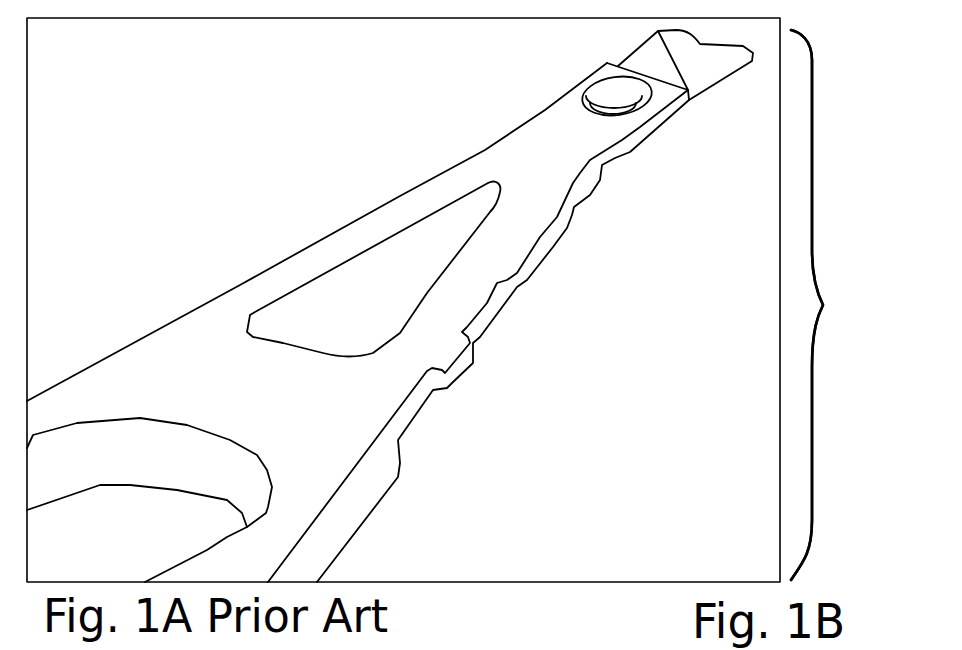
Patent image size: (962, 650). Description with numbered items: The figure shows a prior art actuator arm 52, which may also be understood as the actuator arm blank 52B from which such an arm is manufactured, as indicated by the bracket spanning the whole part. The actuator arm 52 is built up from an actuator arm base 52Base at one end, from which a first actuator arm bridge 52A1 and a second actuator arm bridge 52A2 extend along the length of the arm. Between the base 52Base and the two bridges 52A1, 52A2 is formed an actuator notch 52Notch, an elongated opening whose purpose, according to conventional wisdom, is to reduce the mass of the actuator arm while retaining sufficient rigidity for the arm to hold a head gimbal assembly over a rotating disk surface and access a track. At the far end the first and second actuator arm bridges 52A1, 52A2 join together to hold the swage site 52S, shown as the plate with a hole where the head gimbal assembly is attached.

The first actuator arm bridge 52A1 is at (375, 212).
The swage site 52S is at (622, 107).
The actuator notch 52Notch is at (373, 269).
The second actuator arm bridge 52A2 is at (519, 286).
The actuator arm base 52Base is at (149, 481).
The actuator arm 52 is at (832, 305).
The actuator arm blank 52B is at (834, 305).